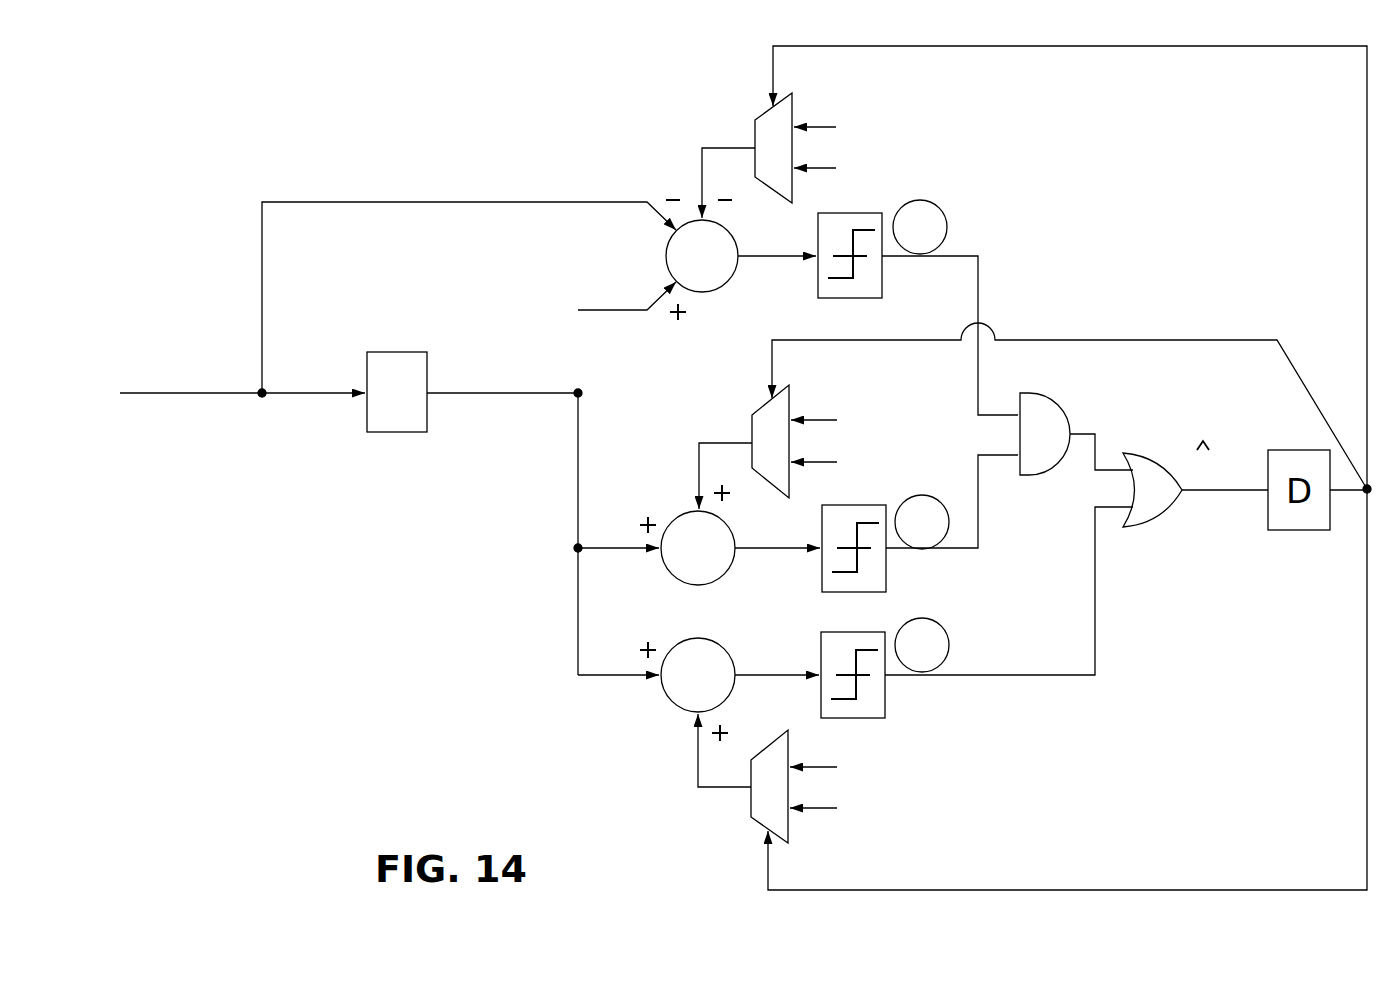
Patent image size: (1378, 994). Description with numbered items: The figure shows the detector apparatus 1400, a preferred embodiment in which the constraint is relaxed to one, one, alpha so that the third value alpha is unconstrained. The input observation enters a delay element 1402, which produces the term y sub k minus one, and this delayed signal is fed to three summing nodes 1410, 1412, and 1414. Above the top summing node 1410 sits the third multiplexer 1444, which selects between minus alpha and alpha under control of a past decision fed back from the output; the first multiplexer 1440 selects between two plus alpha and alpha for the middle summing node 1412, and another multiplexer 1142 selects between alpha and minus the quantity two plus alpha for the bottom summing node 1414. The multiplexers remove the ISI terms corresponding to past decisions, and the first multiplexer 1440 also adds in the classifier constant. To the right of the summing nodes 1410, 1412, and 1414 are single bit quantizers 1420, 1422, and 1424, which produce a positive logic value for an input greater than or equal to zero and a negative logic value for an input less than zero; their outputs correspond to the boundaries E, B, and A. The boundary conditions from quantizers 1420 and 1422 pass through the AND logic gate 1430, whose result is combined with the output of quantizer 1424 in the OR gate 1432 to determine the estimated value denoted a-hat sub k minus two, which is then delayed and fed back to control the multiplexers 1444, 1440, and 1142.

The detector apparatus 1400 is at (270, 118).
The delay element 1402 is at (397, 352).
The summing node 1410 is at (666, 260).
The summing node 1412 is at (670, 574).
The summing node 1414 is at (672, 706).
The single bit quantizer 1420 is at (818, 294).
The single bit quantizer 1422 is at (886, 572).
The single bit quantizer 1424 is at (885, 698).
The AND logic gate 1430 is at (1054, 400).
The OR gate 1432 is at (1158, 522).
The first multiplexer 1440 is at (760, 408).
The third multiplexer 1444 is at (760, 116).
The multiplexer 1142 is at (751, 810).